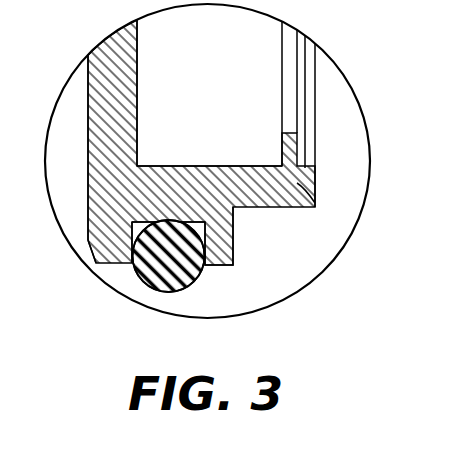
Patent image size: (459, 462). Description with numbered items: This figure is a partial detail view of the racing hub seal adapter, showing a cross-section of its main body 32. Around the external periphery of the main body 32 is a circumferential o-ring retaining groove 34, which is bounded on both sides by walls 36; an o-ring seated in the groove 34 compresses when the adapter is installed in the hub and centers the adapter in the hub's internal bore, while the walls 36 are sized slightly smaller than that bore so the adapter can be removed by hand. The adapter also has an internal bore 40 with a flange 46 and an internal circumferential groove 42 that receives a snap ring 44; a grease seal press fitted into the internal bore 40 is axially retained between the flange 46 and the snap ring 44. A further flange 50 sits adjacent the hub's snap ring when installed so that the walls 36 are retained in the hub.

The main body 32 is at (112, 114).
The o-ring retaining groove 34 is at (236, 223).
The walls 36 is at (234, 257).
The internal bore 40 is at (180, 165).
The internal circumferential groove 42 is at (318, 205).
The snap ring 44 is at (285, 112).
The flange 46 is at (139, 67).
The flange 50 is at (234, 228).